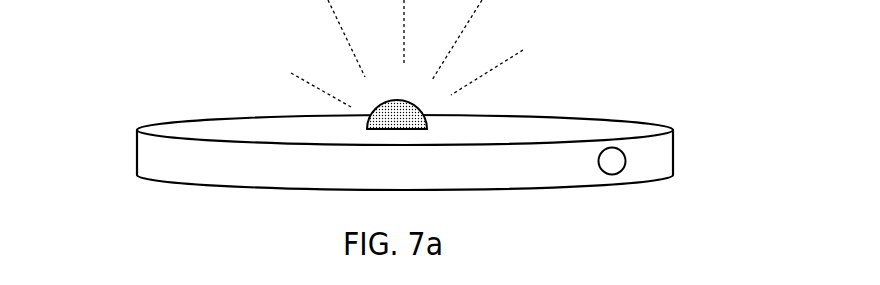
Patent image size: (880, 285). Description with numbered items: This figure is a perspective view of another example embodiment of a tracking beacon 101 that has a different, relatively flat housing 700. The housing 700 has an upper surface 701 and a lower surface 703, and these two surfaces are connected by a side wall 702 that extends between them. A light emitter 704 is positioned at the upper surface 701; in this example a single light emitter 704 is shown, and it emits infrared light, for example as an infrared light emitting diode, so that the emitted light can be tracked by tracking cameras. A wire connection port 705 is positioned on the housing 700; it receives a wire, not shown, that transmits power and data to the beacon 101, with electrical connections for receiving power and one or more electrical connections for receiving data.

The beacon 101 is at (106, 84).
The housing 700 is at (141, 184).
The upper surface 701 is at (610, 130).
The side wall 702 is at (663, 145).
The lower surface 703 is at (543, 190).
The light emitter 704 is at (420, 110).
The wire connection port 705 is at (608, 163).